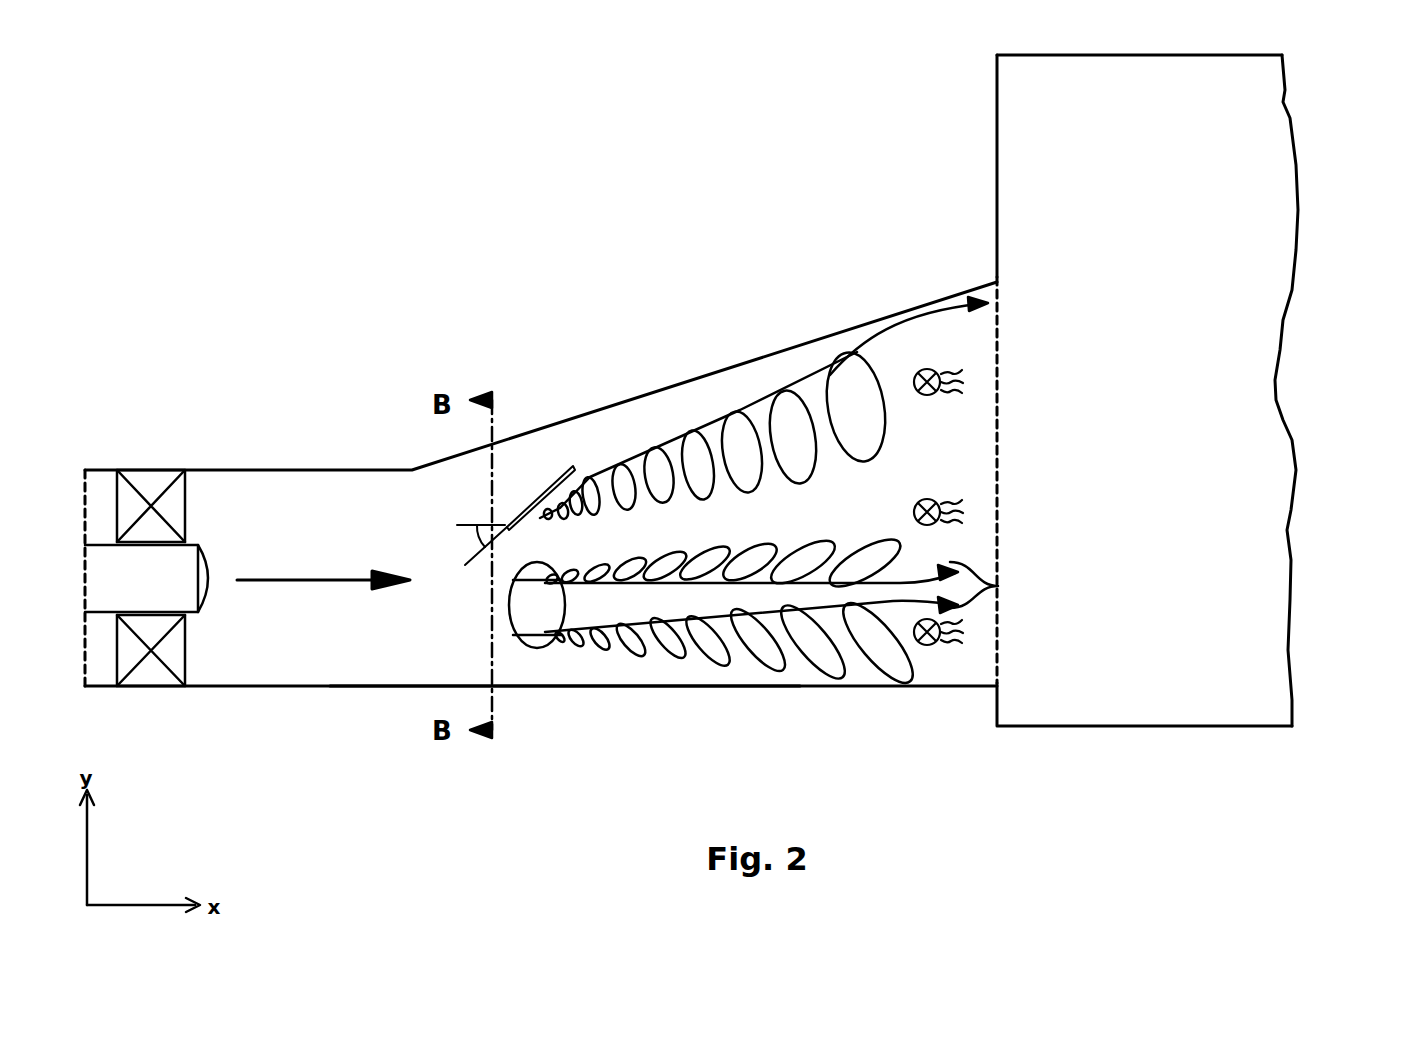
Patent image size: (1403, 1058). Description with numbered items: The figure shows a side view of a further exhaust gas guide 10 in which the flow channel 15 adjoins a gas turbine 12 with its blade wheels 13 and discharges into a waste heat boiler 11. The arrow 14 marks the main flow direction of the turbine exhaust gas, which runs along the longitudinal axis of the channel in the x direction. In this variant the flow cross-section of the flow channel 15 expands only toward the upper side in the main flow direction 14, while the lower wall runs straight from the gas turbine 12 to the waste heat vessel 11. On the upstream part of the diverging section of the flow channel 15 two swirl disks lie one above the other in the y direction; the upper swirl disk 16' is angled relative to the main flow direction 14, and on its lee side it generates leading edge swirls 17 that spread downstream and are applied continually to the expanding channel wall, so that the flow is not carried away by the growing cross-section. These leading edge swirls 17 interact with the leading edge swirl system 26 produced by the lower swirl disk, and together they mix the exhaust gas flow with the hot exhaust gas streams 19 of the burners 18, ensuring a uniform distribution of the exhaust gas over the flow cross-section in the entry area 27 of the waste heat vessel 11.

The exhaust gas guide 10 is at (580, 408).
The waste heat boiler 11 is at (1077, 686).
The gas turbine 12 is at (193, 538).
The blade wheels 13 is at (178, 665).
The main flow direction 14 is at (303, 582).
The flow channel 15 is at (372, 676).
The swirl disk 16' is at (516, 408).
The leading edge swirls 17 is at (837, 350).
The burners 18 is at (927, 367).
The hot exhaust gas streams 19 is at (948, 642).
The leading edge swirl system 26 is at (998, 587).
The entry area 27 is at (997, 392).